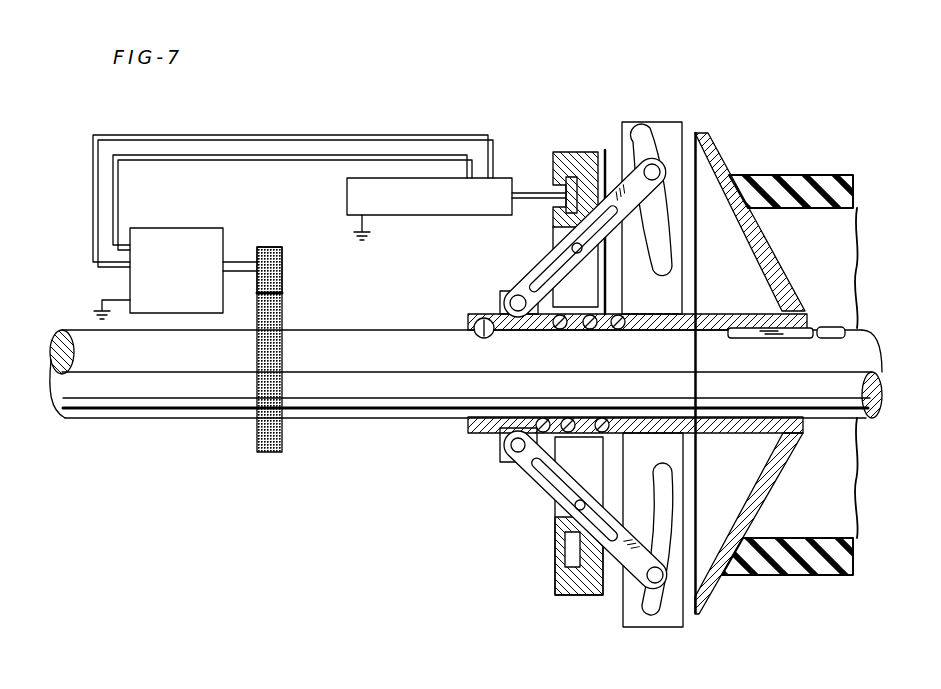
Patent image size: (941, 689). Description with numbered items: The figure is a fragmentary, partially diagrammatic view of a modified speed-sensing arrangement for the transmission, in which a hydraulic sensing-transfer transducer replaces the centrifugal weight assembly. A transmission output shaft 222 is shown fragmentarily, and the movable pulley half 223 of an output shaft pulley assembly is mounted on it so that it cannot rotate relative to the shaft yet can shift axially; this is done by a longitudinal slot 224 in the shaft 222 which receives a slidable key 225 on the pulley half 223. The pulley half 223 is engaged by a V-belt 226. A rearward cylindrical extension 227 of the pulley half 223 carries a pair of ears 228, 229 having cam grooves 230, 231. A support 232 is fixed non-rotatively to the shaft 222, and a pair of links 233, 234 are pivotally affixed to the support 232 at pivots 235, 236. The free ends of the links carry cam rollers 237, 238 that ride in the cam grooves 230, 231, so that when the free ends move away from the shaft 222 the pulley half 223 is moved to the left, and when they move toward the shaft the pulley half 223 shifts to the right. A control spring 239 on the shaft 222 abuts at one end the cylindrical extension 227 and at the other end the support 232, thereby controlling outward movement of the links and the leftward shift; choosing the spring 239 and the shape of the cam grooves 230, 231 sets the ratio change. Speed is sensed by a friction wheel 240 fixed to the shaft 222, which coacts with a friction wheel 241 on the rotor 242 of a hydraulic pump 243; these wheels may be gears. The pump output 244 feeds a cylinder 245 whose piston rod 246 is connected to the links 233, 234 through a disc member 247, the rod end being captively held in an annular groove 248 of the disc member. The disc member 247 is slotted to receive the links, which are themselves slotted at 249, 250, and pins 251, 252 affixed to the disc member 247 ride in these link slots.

The transmission output shaft 222 is at (190, 368).
The movable pulley half 223 is at (765, 248).
The longitudinal slot 224 is at (828, 327).
The key 225 is at (770, 338).
The V-belt 226 is at (848, 223).
The rearward cylindrical extension 227 is at (677, 433).
The ear 228 is at (683, 122).
The ear 229 is at (683, 627).
The cam groove 230 is at (640, 123).
The cam groove 231 is at (671, 490).
The support 232 is at (477, 423).
The link 233 is at (533, 273).
The link 234 is at (547, 483).
The pivot 235 is at (510, 303).
The pivot 236 is at (511, 445).
The cam roller 237 is at (661, 172).
The cam roller 238 is at (647, 582).
The control spring 239 is at (605, 307).
The friction wheel 240 is at (283, 307).
The friction wheel 241 is at (283, 267).
The rotor 242 is at (242, 262).
The hydraulic pump 243 is at (168, 228).
The pump output 244 is at (287, 135).
The cylinder 245 is at (445, 207).
The piston rod 246 is at (530, 193).
The disc member 247 is at (577, 152).
The annular groove 248 is at (572, 548).
The link slot 249 is at (550, 268).
The link slot 250 is at (537, 467).
The pin 251 is at (572, 247).
The pin 252 is at (580, 510).